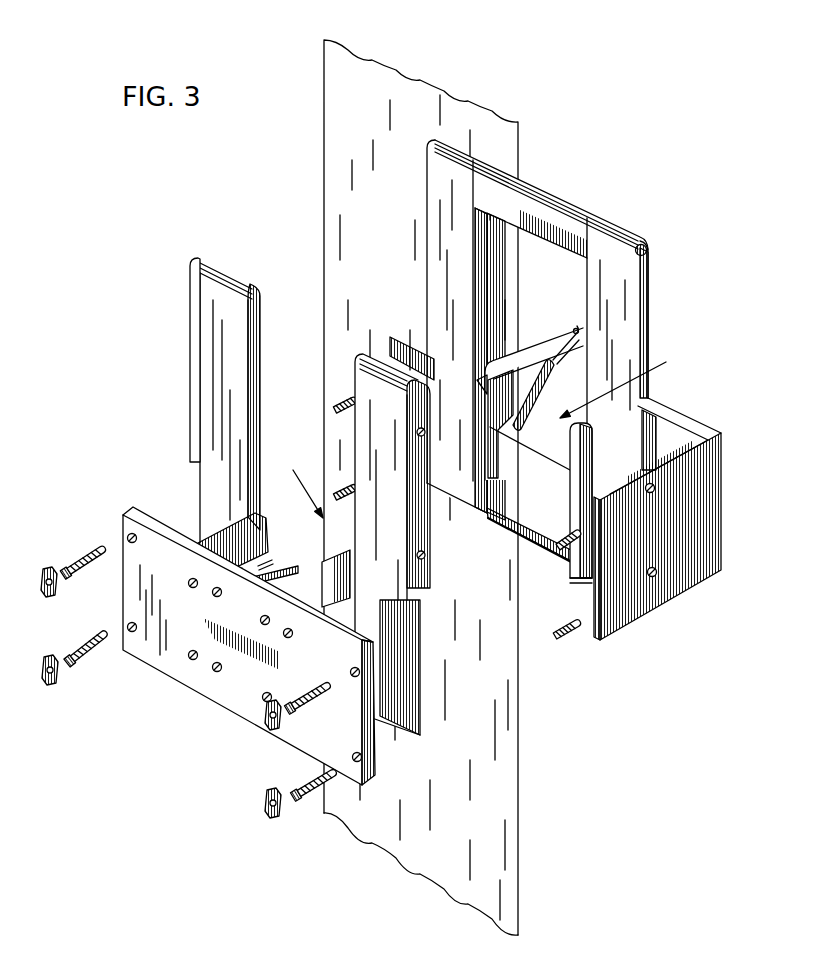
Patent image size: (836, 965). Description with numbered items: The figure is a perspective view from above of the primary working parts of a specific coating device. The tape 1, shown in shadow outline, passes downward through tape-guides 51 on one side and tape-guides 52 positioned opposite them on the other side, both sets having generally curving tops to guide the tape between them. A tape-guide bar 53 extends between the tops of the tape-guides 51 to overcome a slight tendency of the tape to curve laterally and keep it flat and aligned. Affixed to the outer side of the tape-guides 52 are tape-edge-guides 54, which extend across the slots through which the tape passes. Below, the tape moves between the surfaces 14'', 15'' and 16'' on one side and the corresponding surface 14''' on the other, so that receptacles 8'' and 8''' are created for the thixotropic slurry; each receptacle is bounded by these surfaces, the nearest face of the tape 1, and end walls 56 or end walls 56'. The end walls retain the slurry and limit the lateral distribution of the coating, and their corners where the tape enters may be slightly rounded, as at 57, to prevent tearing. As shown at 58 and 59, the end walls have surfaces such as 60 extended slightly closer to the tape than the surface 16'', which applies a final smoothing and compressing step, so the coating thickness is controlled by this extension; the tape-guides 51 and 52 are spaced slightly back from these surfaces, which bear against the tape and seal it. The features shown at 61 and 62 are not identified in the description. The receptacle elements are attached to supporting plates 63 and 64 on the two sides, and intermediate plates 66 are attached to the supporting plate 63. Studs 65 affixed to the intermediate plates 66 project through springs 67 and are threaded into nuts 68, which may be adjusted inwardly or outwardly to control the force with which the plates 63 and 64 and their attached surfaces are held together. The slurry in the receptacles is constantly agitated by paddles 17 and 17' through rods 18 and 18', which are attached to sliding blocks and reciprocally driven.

The tape 1 is at (394, 88).
The tape-guides 51 is at (437, 200).
The tape-guide bar 53 is at (527, 200).
The tape-edge-guides 54 is at (193, 364).
The tape-guides 52 is at (240, 370).
The end walls 56 is at (556, 439).
The end walls 56' is at (276, 553).
The rounded corners 57 is at (479, 394).
The end wall surface extension 58 is at (500, 512).
The end wall surface extension 59 is at (588, 568).
The end wall surfaces 60 is at (482, 488).
The post lower edge 61 is at (471, 509).
The bracket base 62 is at (587, 592).
The supporting plate 63 is at (683, 418).
The supporting plate 64 is at (224, 694).
The studs 65 is at (337, 406).
The intermediate plates 66 is at (418, 338).
The springs 67 is at (104, 545).
The nuts 68 is at (42, 575).
The paddle 17 is at (542, 395).
The paddle 17' is at (285, 570).
The rod 18 is at (574, 310).
The rod 18' is at (245, 592).
The surface 14'' is at (565, 340).
The surface 14''' is at (291, 549).
The surface 15'' is at (531, 547).
The surface 16'' is at (531, 550).
The receptacle 8'' is at (626, 382).
The receptacle 8''' is at (300, 484).